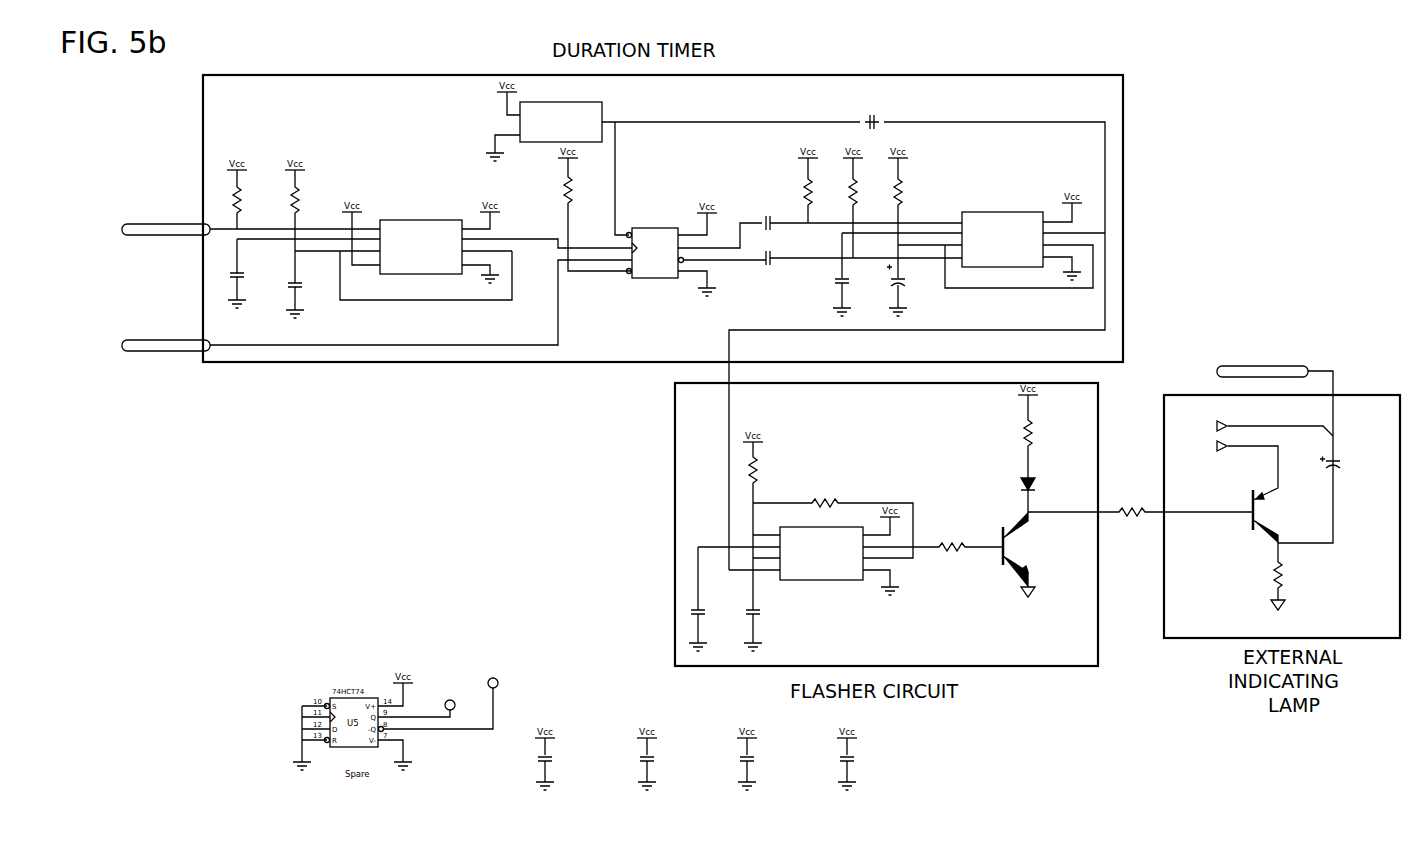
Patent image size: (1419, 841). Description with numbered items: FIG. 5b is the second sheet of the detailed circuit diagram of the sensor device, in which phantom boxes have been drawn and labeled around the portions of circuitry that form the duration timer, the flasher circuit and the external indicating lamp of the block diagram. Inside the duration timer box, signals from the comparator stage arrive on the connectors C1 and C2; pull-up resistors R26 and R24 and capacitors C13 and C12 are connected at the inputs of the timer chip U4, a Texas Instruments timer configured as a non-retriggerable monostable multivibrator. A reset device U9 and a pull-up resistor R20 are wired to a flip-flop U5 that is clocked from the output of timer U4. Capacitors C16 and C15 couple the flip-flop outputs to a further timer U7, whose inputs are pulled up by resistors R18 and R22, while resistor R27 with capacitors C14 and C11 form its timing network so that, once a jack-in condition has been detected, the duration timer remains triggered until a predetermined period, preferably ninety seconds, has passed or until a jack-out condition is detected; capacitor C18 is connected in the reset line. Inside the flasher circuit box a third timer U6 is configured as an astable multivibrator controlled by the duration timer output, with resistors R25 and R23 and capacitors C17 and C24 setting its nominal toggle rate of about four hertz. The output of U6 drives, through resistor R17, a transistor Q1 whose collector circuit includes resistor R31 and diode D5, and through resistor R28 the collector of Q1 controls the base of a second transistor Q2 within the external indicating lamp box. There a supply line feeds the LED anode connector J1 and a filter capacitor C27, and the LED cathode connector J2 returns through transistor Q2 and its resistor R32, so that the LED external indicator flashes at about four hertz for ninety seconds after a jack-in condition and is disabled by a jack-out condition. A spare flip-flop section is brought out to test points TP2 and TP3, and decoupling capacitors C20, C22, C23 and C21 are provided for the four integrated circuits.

The input connector C1 is at (240, 229).
The input connector C2 is at (366, 305).
The resistor 499k R26 is at (251, 194).
The resistor 221k R24 is at (309, 221).
The capacitor 0.01uF C13 is at (304, 273).
The capacitor 0.22uF C12 is at (399, 284).
The TLC555 timer U4 is at (487, 242).
The DS1233DZ reset circuit U9 is at (795, 325).
The resistor 10k R20 is at (595, 209).
The 74HCT74 flip-flop U5 is at (788, 209).
The capacitor 0.01uF C16 is at (769, 210).
The capacitor 0.01uF C15 is at (769, 274).
The capacitor 0.01uF C18 is at (872, 110).
The resistor 10k R18 is at (820, 185).
The resistor 10k R22 is at (865, 202).
The resistor 3.01M R27 is at (912, 212).
The capacitor 0.01uF C14 is at (897, 274).
The capacitor 22uF C11 is at (924, 280).
The TLC555 timer U7 is at (1025, 240).
The resistor 221k R25 is at (768, 520).
The resistor 100k R23 is at (833, 520).
The capacitor 0.01uF C17 is at (734, 599).
The capacitor 0.68uF C24 is at (767, 593).
The TLC555 timer U6 is at (833, 550).
The resistor 10k R17 is at (968, 559).
The transistor MMBT3904 Q1 is at (1029, 554).
The diode MMBD914 D5 is at (1053, 481).
The resistor 5.11k R31 is at (1043, 417).
The resistor 51.1k R28 is at (1140, 524).
The LED anode connector J1 is at (1260, 421).
The LED cathode connector J2 is at (1232, 464).
The capacitor 330uF C27 is at (1282, 454).
The transistor MJD5731 Q2 is at (1274, 512).
The resistor 1k R32 is at (1287, 576).
The test point 2 TP2 is at (450, 703).
The test point 3 TP3 is at (425, 709).
The U4 decoupling capacitor C20 is at (553, 765).
The U5 decoupling capacitor C22 is at (655, 765).
The U6 decoupling capacitor C23 is at (755, 765).
The U7 decoupling capacitor C21 is at (855, 765).